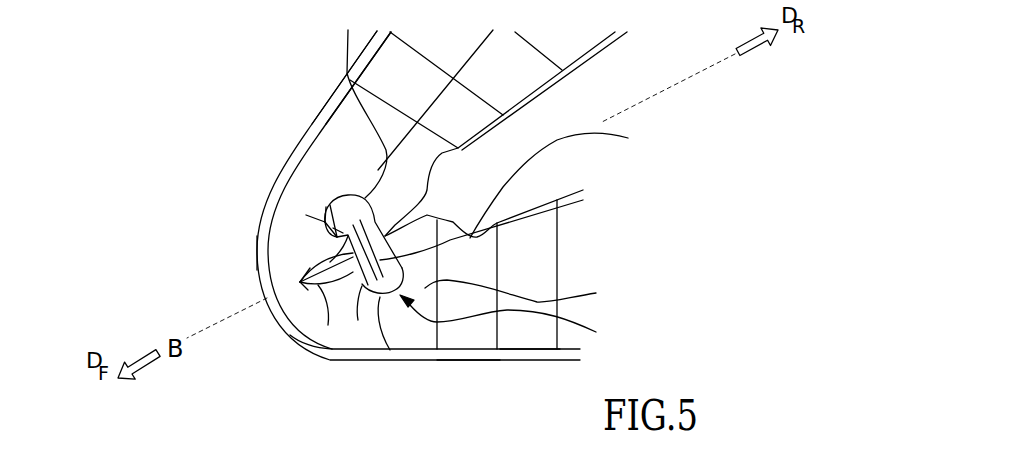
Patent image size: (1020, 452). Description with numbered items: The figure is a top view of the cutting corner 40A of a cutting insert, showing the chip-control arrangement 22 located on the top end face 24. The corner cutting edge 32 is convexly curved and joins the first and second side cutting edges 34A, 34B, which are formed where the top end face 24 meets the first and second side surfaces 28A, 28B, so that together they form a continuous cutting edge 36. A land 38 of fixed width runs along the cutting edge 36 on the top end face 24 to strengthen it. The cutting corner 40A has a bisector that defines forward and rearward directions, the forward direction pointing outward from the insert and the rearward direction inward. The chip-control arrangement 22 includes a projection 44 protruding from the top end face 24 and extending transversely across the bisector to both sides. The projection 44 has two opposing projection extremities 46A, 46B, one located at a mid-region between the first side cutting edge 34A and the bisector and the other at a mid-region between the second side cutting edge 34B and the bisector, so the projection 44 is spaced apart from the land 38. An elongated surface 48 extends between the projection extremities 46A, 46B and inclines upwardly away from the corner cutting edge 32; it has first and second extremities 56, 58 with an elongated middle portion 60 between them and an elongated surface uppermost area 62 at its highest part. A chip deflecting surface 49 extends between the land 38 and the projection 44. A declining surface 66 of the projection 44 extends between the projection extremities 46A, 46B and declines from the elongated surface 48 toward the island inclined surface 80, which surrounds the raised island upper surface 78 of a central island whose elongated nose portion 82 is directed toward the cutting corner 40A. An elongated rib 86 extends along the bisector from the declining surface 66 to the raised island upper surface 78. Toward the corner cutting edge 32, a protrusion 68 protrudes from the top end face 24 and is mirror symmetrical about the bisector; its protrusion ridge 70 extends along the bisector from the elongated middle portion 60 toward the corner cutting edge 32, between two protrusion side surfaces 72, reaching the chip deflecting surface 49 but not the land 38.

The chip-control arrangement 22 is at (300, 108).
The top end face 24 is at (522, 56).
The first side surface 28A is at (347, 87).
The second side surface 28B is at (512, 364).
The first side cutting edge 34A is at (313, 117).
The second side cutting edge 34B is at (470, 364).
The declining surface 66 is at (363, 103).
The elongated middle portion 60 is at (519, 192).
The elongated rib 86 is at (428, 193).
The raised island upper surface 78 is at (560, 165).
The elongated nose portion 82 is at (507, 193).
The island inclined surface 80 is at (533, 257).
The elongated surface 48 is at (526, 293).
The projection 44 is at (513, 323).
The projection extremity 46A is at (355, 196).
The projection extremity 46B is at (390, 350).
The elongated surface uppermost area 62 is at (330, 205).
The land 38 is at (326, 207).
The cutting corner 40A is at (300, 208).
The first extremity 56 is at (325, 222).
The corner cutting edge 32 is at (300, 282).
The chip deflecting surface 49 is at (260, 234).
The protrusion side surfaces 72 is at (302, 285).
The protrusion 68 is at (298, 300).
The protrusion ridge 70 is at (328, 325).
The second extremity 58 is at (358, 320).
The continuous cutting edge 36 is at (338, 372).